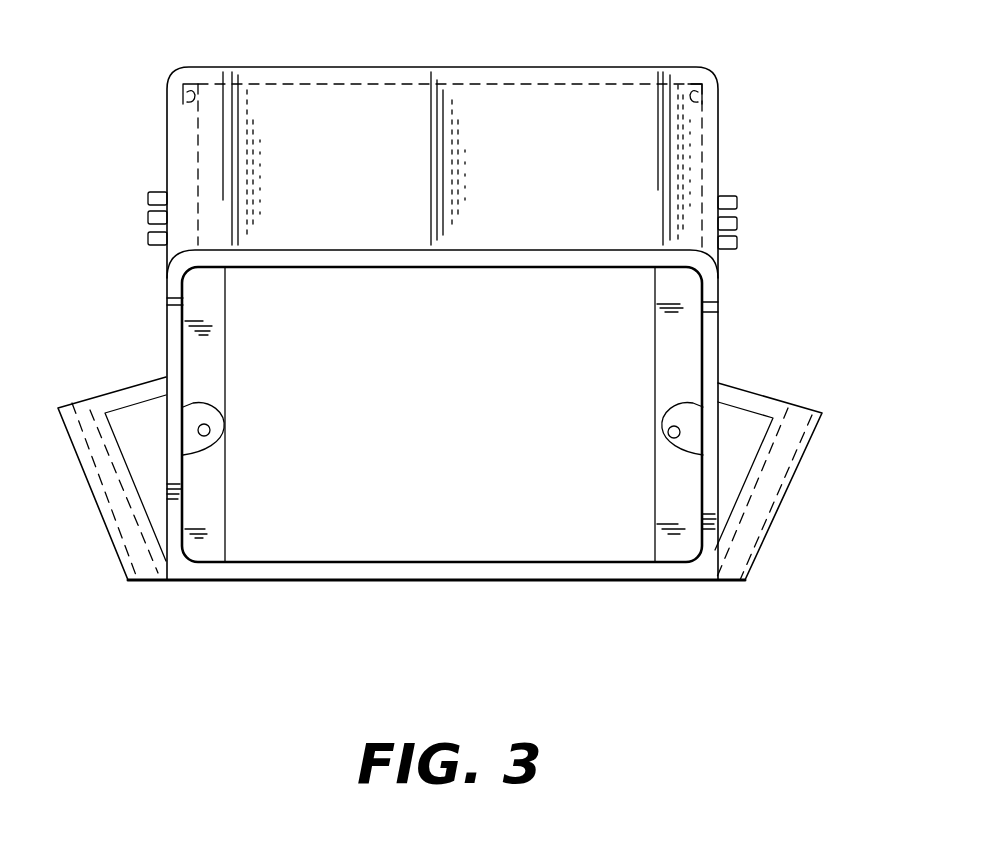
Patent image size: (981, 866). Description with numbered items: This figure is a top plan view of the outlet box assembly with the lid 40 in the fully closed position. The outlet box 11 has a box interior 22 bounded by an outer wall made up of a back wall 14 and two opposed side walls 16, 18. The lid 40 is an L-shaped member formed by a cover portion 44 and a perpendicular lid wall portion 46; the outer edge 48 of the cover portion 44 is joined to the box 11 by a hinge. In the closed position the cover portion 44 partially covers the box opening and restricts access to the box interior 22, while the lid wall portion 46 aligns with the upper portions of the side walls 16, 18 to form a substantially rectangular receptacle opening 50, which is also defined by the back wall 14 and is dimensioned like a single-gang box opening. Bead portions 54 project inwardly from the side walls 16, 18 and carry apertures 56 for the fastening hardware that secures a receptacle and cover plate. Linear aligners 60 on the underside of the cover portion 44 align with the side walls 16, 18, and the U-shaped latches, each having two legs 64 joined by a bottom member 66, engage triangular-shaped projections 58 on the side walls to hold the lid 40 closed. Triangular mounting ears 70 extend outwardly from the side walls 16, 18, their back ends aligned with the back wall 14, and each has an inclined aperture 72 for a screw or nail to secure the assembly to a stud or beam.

The outlet box 11 is at (172, 328).
The back wall 14 is at (347, 582).
The side wall 16 is at (168, 513).
The side wall 18 is at (715, 500).
The box interior 22 is at (625, 347).
The lid 40 is at (246, 88).
The cover portion 44 is at (604, 108).
The lid wall portion 46 is at (285, 252).
The outer edge 48 is at (446, 88).
The receptacle opening 50 is at (253, 550).
The bead portion 54 is at (190, 412).
The aperture 56 is at (210, 429).
The triangular-shaped projection 58 is at (737, 220).
The linear aligner 60 is at (194, 130).
The leg 64 is at (150, 243).
The bottom member 66 is at (150, 216).
The mounting ear 70 is at (105, 522).
The aperture 72 is at (70, 385).